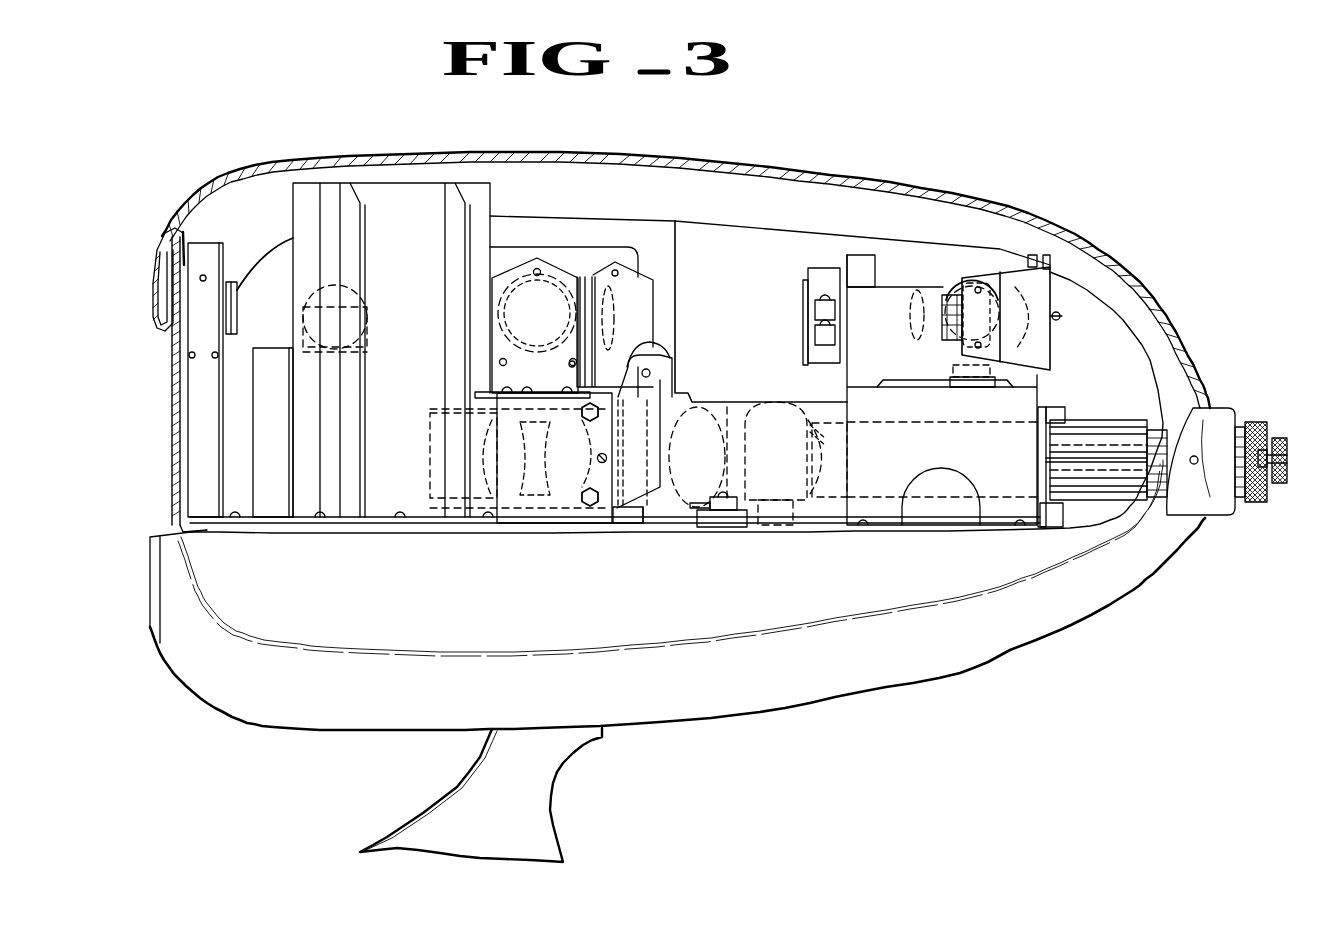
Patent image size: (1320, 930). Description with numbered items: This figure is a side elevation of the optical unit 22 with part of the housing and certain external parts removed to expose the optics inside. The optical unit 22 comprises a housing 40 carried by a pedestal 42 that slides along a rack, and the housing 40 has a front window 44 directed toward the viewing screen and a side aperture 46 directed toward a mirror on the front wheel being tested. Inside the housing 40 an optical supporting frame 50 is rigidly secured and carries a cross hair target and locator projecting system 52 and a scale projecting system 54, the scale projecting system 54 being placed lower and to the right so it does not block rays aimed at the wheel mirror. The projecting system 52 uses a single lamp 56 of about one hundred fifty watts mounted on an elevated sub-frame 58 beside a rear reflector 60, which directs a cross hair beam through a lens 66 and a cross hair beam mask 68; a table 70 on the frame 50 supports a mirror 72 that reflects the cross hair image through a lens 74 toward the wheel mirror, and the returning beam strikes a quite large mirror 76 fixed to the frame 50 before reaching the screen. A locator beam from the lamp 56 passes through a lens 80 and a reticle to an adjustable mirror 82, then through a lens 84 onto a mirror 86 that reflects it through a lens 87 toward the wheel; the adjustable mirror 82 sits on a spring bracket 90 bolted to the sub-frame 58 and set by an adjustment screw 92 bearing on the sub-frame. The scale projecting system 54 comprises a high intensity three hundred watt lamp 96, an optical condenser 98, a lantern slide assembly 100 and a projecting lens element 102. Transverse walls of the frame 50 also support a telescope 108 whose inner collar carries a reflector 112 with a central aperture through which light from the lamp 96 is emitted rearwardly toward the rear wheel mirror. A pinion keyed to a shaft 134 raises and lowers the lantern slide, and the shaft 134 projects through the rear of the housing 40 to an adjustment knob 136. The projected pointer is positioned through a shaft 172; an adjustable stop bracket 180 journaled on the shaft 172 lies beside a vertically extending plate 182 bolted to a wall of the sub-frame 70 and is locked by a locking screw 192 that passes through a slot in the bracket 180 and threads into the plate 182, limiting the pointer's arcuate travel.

The optical unit 22 is at (1018, 125).
The housing 40 is at (640, 162).
The pedestal 42 is at (503, 815).
The front window 44 is at (170, 362).
The side aperture 46 is at (547, 246).
The optical supporting frame 50 is at (938, 528).
The cross hair target and locator projecting system 52 is at (1003, 250).
The scale projecting system 54 is at (810, 417).
The lamp 56 is at (968, 266).
The elevated sub-frame 58 is at (1036, 397).
The rear reflector 60 is at (1052, 338).
The lens 66 is at (908, 303).
The cross hair beam mask 68 is at (805, 297).
The table 70 is at (508, 398).
The mirror 72 is at (497, 290).
The lens 74 is at (500, 312).
The mirror 76 is at (293, 224).
The lens 80 is at (950, 274).
The adjustable mirror 82 is at (952, 335).
The lens 84 is at (614, 316).
The mirror 86 is at (237, 309).
The lens 87 is at (356, 286).
The spring bracket 90 is at (1043, 361).
The adjustment screw 92 is at (1062, 317).
The lamp 96 is at (750, 413).
The optical condenser 98 is at (693, 437).
The lantern slide assembly 100 is at (617, 523).
The projecting lens element 102 is at (524, 500).
The telescope 108 is at (1068, 453).
The reflector 112 is at (845, 449).
The shaft 134 is at (1044, 458).
The adjustment knob 136 is at (1286, 484).
The shaft 172 is at (597, 457).
The adjustable stop bracket 180 is at (656, 345).
The vertically extending plate 182 is at (642, 513).
The locking screw 192 is at (662, 368).